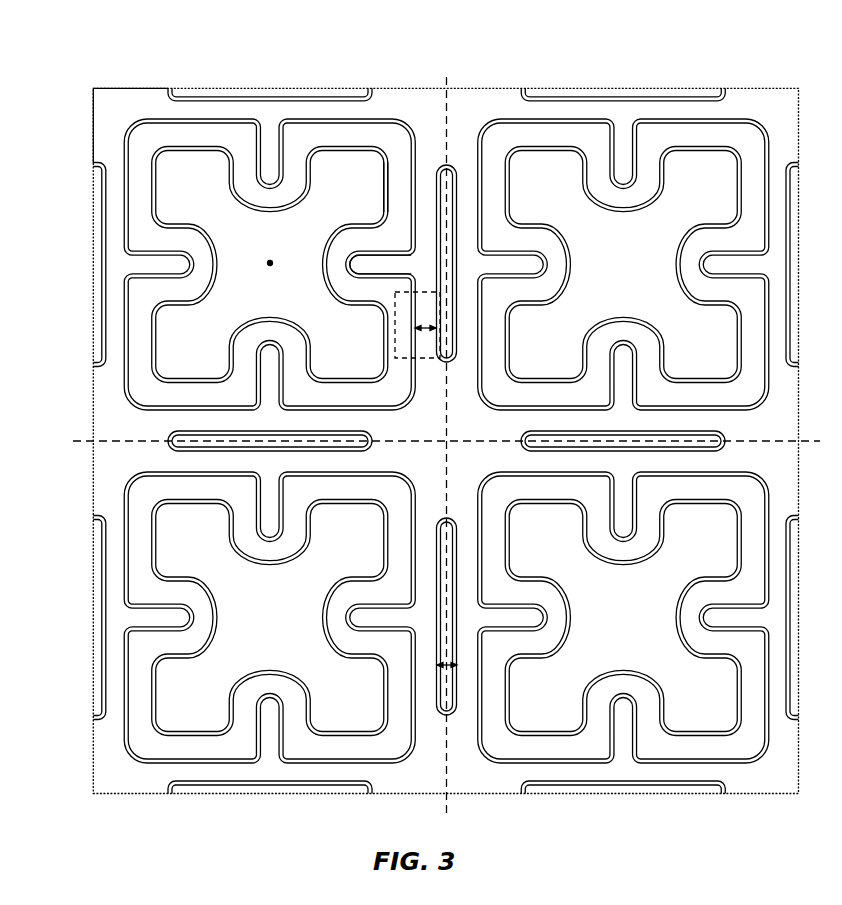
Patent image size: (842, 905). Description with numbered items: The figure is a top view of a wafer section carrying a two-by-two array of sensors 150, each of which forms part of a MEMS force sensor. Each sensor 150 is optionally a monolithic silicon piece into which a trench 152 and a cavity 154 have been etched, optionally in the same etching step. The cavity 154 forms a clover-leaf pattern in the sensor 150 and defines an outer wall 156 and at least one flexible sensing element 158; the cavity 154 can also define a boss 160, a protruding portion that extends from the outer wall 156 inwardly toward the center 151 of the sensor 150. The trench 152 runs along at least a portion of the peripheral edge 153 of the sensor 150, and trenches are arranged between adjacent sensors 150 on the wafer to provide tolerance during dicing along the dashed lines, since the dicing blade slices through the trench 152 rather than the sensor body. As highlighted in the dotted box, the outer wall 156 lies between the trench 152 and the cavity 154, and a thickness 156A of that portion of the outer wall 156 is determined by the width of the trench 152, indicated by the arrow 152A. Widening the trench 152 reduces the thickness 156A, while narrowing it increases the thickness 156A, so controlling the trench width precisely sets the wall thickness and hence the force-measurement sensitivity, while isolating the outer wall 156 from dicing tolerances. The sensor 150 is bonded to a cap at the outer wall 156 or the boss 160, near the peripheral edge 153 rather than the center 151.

The sensor 150 is at (101, 87).
The center 151 is at (271, 257).
The trench 152 is at (283, 86).
The width of the trench 152A is at (442, 676).
The peripheral edge 153 is at (160, 86).
The cavity 154 is at (377, 119).
The outer wall 156 is at (425, 350).
The thickness of the outer wall 156A is at (425, 322).
The flexible sensing element 158 is at (381, 175).
The boss 160 is at (380, 266).